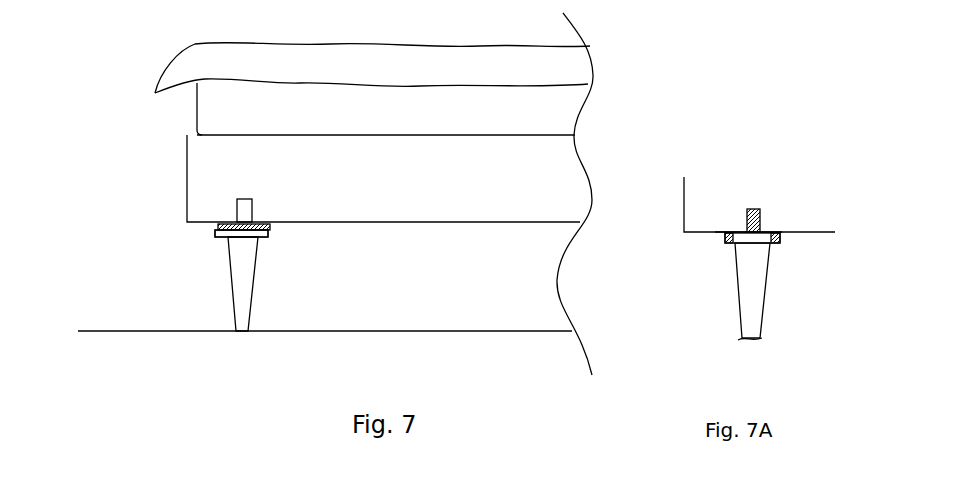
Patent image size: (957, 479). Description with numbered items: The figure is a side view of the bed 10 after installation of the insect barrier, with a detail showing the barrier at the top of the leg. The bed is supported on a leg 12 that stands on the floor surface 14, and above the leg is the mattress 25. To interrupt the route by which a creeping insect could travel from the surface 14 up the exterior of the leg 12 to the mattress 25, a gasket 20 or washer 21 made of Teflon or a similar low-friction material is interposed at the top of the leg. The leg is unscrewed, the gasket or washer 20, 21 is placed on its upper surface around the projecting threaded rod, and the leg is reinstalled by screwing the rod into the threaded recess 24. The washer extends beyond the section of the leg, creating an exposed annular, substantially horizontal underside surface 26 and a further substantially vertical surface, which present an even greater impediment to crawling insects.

In FIG. 7, the table assembly 10 is at (112, 246).
In FIG. 7, the leg 12 is at (248, 287).
In FIG. 7A, the leg 12 is at (757, 318).
In FIG. 7, the surface 14 is at (455, 331).
In FIG. 7, the gasket 20 is at (273, 227).
In FIG. 7A, the gasket 20 is at (780, 233).
In FIG. 7, the washer 21 is at (241, 233).
In FIG. 7, the threaded recess 24 is at (238, 215).
In FIG. 7, the mattress 25 is at (197, 115).
In FIG. 7A, the underside surface 26 is at (720, 240).